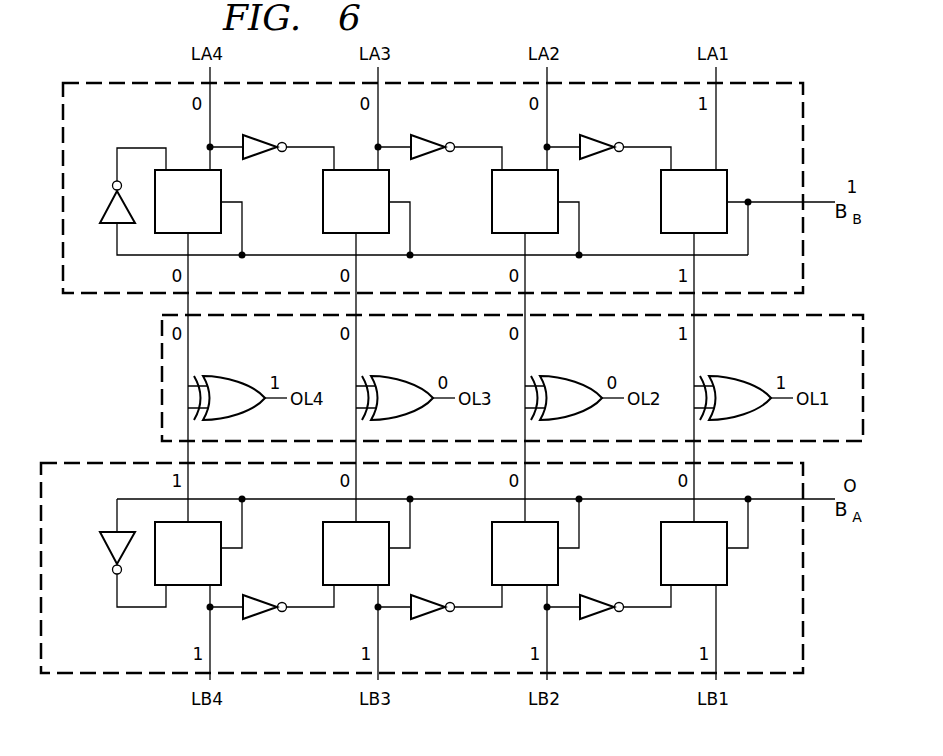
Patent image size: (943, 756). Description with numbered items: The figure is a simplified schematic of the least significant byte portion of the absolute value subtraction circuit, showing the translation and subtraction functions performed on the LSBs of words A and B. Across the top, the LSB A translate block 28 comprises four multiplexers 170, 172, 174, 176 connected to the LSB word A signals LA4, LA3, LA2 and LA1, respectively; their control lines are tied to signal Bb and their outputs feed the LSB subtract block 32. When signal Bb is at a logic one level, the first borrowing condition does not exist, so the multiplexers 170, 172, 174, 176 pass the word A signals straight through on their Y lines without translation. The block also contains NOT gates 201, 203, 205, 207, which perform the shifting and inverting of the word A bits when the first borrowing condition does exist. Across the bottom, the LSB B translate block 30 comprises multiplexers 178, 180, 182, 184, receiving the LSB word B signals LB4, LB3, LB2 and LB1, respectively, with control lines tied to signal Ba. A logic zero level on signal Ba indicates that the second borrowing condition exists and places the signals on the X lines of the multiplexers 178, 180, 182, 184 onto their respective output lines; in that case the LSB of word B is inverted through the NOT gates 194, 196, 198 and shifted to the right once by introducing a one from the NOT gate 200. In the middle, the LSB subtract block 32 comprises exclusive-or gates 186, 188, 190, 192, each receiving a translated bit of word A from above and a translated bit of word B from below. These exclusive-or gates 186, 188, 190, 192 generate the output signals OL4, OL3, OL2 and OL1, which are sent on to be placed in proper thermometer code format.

The LSB A translate block 28 is at (803, 146).
The LSB B translate block 30 is at (803, 578).
The LSB subtract block 32 is at (162, 355).
The multiplexer 170 is at (222, 190).
The multiplexer 172 is at (390, 190).
The multiplexer 174 is at (559, 190).
The multiplexer 176 is at (728, 190).
The multiplexer 178 is at (222, 563).
The multiplexer 180 is at (390, 563).
The multiplexer 182 is at (559, 563).
The multiplexer 184 is at (728, 563).
The exclusive-or gate 186 is at (227, 373).
The exclusive-or gate 188 is at (395, 373).
The exclusive-or gate 190 is at (564, 373).
The exclusive-or gate 192 is at (733, 373).
The NOT gate 194 is at (267, 624).
The NOT gate 196 is at (435, 624).
The NOT gate 198 is at (604, 624).
The NOT gate 200 is at (108, 548).
The NOT gate 201 is at (108, 226).
The NOT gate 203 is at (268, 133).
The NOT gate 205 is at (436, 133).
The NOT gate 207 is at (605, 133).